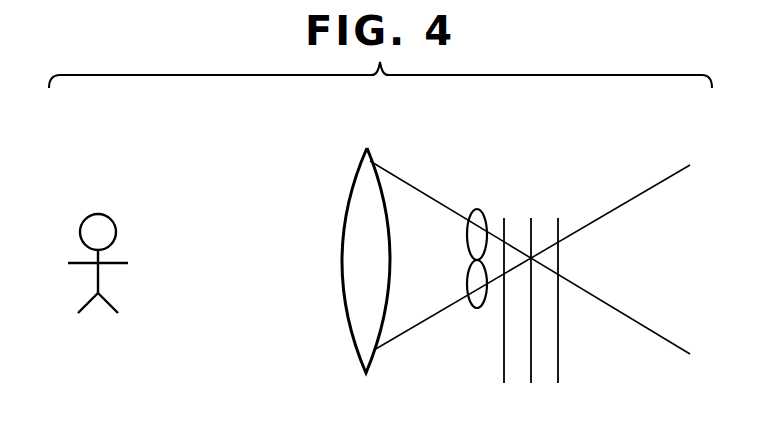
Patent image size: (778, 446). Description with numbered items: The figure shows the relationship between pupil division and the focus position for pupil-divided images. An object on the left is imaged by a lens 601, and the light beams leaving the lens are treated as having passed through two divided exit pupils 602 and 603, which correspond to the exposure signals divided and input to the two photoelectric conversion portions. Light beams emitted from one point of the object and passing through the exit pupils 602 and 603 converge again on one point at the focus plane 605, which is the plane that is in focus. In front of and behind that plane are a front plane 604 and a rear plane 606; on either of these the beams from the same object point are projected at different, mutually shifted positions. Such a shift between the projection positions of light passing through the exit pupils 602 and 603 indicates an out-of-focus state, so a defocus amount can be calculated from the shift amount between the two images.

The lens 601 is at (367, 148).
The exit pupil 602 is at (478, 209).
The exit pupil 603 is at (472, 308).
The front plane 604 is at (503, 378).
The focus plane 605 is at (548, 207).
The rear plane 606 is at (557, 378).